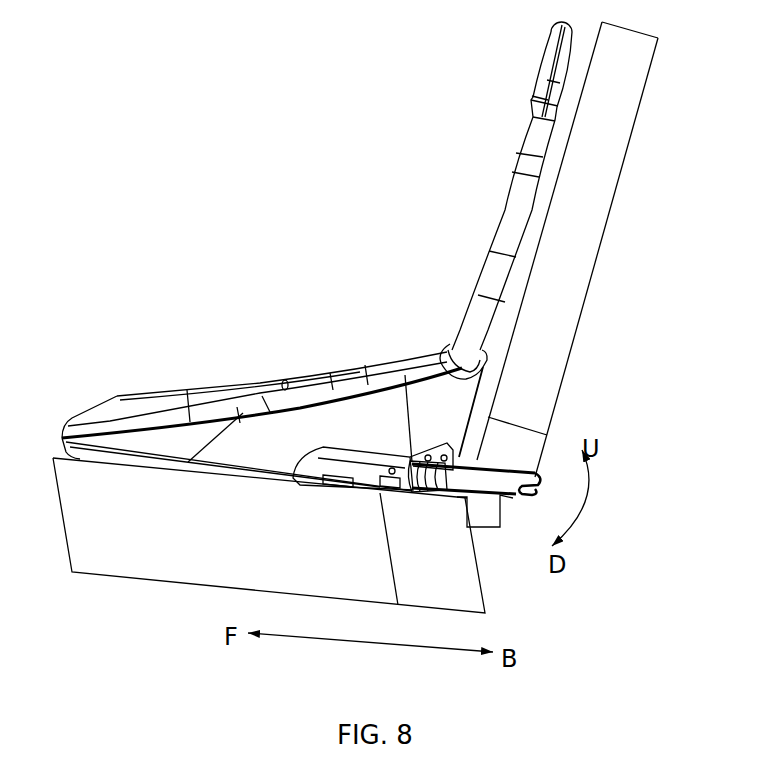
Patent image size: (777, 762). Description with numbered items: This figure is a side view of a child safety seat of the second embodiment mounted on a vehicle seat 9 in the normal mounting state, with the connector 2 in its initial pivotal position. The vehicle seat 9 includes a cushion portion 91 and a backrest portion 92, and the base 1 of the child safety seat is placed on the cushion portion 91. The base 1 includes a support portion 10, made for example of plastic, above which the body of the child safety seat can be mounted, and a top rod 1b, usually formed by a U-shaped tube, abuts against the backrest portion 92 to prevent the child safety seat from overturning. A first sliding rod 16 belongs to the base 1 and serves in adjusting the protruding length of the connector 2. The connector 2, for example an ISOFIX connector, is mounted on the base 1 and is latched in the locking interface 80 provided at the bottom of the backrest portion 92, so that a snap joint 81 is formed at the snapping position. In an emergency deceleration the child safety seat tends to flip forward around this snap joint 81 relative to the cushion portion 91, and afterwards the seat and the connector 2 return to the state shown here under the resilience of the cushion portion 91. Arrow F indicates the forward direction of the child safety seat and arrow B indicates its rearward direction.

The base 1 is at (200, 357).
The support portion 10 is at (138, 411).
The first sliding rod 16 is at (358, 462).
The top rod 1b is at (512, 245).
The vehicle seat 9 is at (615, 304).
The backrest portion 92 is at (575, 243).
The connector 2 is at (535, 474).
The locking interface 80 is at (508, 462).
The snap joint 81 is at (517, 496).
The cushion portion 91 is at (253, 555).